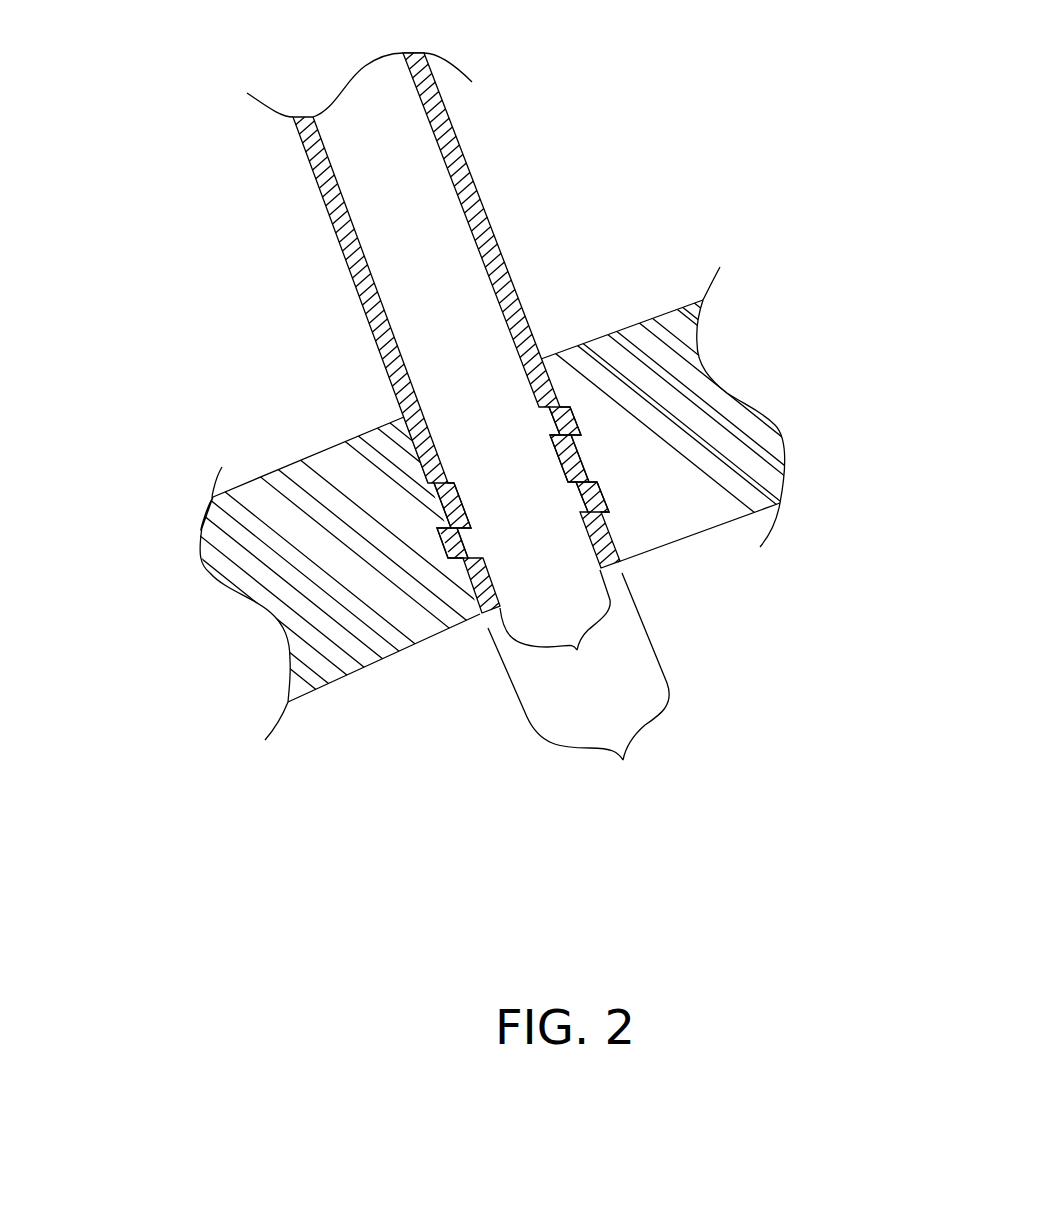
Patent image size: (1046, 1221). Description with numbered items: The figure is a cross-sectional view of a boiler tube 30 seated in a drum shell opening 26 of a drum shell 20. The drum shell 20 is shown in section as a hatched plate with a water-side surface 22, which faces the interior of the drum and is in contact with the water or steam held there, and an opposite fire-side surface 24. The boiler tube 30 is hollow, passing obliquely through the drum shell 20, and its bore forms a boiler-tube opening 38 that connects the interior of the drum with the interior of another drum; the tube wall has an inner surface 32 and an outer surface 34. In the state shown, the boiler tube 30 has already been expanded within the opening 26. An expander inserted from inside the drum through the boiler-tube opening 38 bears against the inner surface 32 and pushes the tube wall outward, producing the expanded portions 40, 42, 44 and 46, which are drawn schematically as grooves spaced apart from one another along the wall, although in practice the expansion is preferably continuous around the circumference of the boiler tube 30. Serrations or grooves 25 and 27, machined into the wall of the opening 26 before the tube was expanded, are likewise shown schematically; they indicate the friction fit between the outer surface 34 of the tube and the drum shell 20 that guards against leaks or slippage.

The drum shell 20 is at (523, 520).
The water-side surface 22 is at (328, 683).
The fire-side surface 24 is at (380, 417).
The serration or groove 25 is at (413, 472).
The drum shell opening 26 is at (623, 760).
The serration or groove 27 is at (578, 415).
The boiler tube 30 is at (395, 324).
The inner surface 32 is at (344, 357).
The outer surface 34 is at (567, 302).
The boiler-tube opening 38 is at (577, 650).
The expanded portion 40 is at (552, 430).
The expanded portion 42 is at (445, 463).
The expanded portion 44 is at (575, 498).
The expanded portion 46 is at (472, 543).